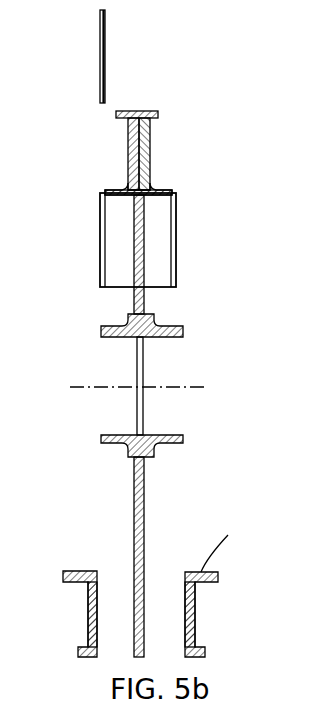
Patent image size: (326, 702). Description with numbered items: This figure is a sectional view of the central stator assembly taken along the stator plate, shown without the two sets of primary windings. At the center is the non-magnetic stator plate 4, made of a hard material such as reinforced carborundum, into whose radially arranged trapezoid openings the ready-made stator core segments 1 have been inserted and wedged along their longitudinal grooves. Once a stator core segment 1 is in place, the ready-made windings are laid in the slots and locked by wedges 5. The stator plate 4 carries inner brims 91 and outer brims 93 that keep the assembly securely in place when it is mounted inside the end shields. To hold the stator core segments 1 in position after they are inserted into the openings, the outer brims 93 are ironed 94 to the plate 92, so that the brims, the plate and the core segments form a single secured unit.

The stator core segment 1 is at (177, 226).
The non-magnetic stator plate 4 is at (146, 105).
The wedge 5 is at (105, 52).
The inner brim 91 is at (118, 337).
The plate 92 is at (145, 518).
The outer brim 93 is at (140, 585).
The ironing 94 is at (87, 618).